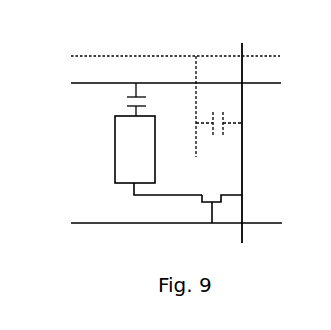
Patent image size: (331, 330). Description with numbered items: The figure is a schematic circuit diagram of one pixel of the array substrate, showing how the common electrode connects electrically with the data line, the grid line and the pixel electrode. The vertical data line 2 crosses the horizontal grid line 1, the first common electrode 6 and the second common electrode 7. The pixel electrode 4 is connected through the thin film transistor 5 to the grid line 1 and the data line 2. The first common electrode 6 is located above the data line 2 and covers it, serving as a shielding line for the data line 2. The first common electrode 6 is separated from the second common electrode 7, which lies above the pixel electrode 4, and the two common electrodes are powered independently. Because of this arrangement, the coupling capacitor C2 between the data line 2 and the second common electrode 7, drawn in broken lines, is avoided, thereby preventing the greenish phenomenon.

The grid line 1 is at (183, 223).
The data line 2 is at (239, 136).
The pixel electrode 4 is at (135, 149).
The thin film transistor 5 is at (222, 219).
The first common electrode 6 is at (184, 56).
The second common electrode 7 is at (184, 83).
The coupling capacitor C2 is at (219, 106).